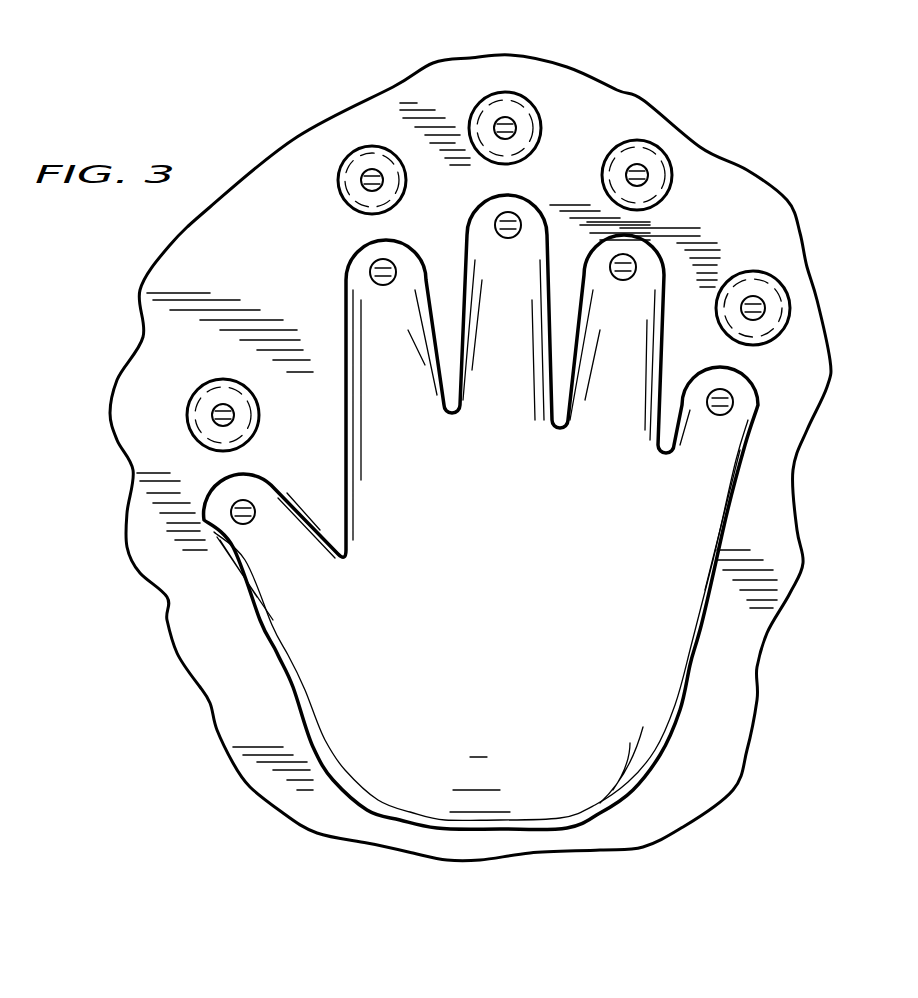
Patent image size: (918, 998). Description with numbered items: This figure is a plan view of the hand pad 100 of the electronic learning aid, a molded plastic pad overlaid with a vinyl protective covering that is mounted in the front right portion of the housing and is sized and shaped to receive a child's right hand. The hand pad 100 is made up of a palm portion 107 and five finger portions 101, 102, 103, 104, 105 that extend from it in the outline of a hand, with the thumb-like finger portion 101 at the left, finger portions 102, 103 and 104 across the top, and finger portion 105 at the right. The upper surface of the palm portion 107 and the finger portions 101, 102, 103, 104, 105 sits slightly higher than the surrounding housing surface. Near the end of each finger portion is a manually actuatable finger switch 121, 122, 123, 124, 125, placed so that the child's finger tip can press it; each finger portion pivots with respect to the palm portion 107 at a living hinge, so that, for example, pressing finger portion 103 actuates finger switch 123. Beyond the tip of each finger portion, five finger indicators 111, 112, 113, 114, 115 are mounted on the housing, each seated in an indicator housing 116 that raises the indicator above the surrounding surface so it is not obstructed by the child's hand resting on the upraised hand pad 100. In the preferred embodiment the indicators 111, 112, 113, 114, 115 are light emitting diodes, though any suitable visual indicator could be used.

The hand pad 100 is at (700, 677).
The finger portion 101 is at (277, 557).
The finger portion 102 is at (387, 325).
The finger portion 103 is at (521, 300).
The finger portion 104 is at (630, 297).
The finger portion 105 is at (717, 433).
The palm portion 107 is at (495, 588).
The finger indicator 111 is at (220, 410).
The finger indicator 112 is at (365, 167).
The finger indicator 113 is at (507, 120).
The finger indicator 114 is at (637, 163).
The finger indicator 115 is at (760, 300).
The indicator housing 116 is at (347, 177).
The finger switch 121 is at (240, 512).
The finger switch 122 is at (380, 267).
The finger switch 123 is at (513, 222).
The finger switch 124 is at (630, 260).
The finger switch 125 is at (730, 398).